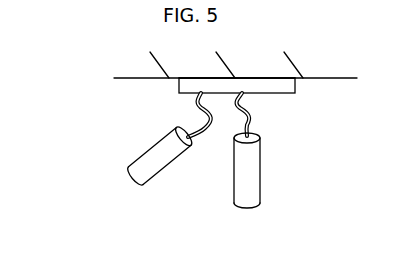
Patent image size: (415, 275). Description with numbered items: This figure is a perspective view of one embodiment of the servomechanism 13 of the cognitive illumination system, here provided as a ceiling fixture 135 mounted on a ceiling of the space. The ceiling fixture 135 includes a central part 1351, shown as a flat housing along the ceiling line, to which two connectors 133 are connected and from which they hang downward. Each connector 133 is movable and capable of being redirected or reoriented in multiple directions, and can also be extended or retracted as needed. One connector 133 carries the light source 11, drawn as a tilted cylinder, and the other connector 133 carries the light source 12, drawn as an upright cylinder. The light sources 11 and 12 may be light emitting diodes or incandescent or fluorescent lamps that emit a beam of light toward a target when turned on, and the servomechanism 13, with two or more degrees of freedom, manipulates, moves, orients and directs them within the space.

The light source 11 is at (132, 162).
The light source 12 is at (260, 193).
The servomechanism 13 is at (297, 86).
The connector 133 is at (238, 103).
The ceiling fixture 135 is at (194, 84).
The central part 1351 is at (277, 83).